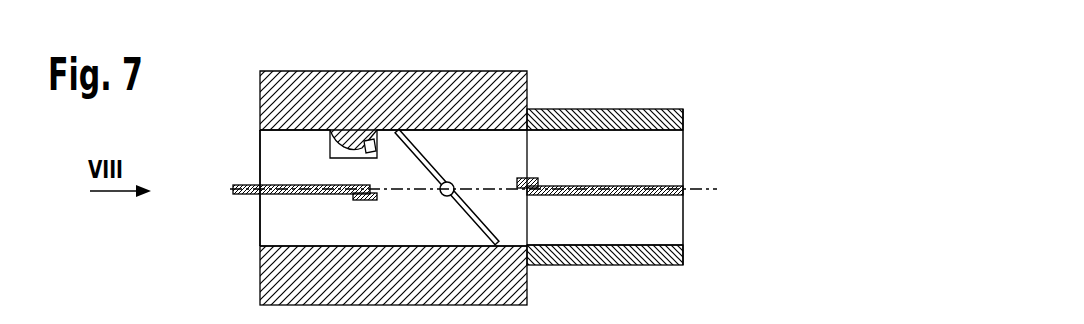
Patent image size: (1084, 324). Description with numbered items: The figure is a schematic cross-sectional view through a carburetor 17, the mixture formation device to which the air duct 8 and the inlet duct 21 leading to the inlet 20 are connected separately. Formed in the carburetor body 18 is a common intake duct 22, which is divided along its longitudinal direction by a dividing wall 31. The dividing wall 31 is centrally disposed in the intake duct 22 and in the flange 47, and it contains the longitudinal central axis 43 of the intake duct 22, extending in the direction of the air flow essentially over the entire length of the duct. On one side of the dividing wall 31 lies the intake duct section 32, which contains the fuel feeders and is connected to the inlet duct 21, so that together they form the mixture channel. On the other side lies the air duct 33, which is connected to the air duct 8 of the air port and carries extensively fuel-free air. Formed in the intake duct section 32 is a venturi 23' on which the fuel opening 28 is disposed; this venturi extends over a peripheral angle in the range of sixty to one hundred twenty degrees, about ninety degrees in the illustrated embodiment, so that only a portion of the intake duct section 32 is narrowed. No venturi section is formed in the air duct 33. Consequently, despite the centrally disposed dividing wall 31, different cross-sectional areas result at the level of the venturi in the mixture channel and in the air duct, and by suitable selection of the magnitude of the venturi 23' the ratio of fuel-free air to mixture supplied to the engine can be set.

The air duct 8 is at (618, 235).
The carburetor 17 is at (538, 55).
The carburetor body 18 is at (277, 282).
The inlet 20 is at (352, 8).
The inlet duct 21 is at (637, 147).
The intake duct 22 is at (263, 223).
The venturi 23' is at (326, 95).
The fuel opening 28 is at (367, 140).
The dividing wall 31 is at (262, 184).
The intake duct section 32 is at (489, 163).
The air duct 33 is at (359, 234).
The longitudinal central axis 43 is at (706, 188).
The flange 47 is at (592, 108).